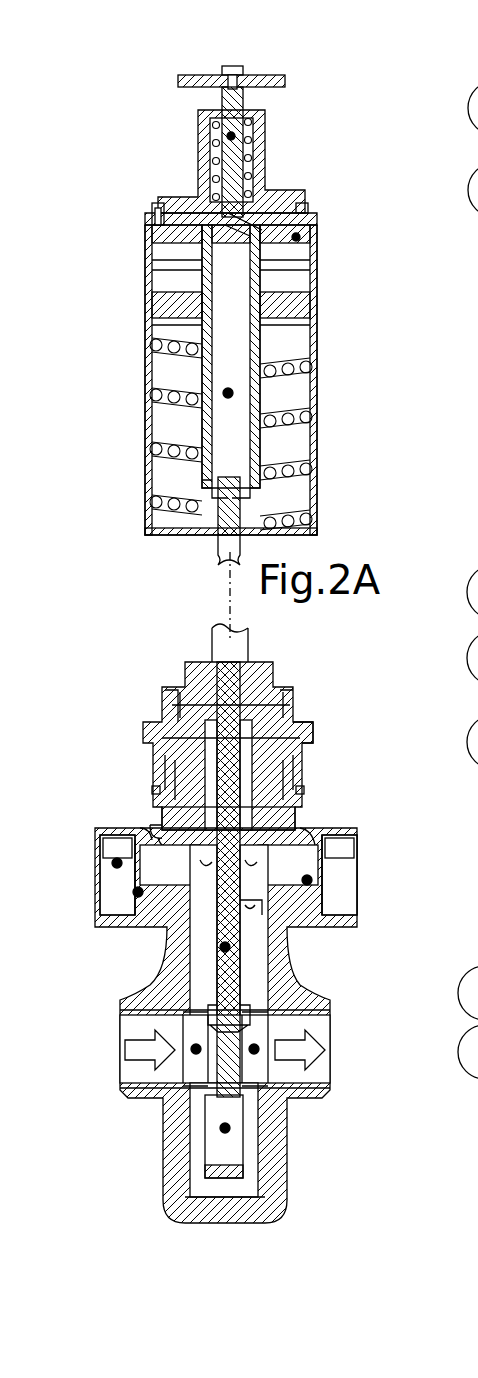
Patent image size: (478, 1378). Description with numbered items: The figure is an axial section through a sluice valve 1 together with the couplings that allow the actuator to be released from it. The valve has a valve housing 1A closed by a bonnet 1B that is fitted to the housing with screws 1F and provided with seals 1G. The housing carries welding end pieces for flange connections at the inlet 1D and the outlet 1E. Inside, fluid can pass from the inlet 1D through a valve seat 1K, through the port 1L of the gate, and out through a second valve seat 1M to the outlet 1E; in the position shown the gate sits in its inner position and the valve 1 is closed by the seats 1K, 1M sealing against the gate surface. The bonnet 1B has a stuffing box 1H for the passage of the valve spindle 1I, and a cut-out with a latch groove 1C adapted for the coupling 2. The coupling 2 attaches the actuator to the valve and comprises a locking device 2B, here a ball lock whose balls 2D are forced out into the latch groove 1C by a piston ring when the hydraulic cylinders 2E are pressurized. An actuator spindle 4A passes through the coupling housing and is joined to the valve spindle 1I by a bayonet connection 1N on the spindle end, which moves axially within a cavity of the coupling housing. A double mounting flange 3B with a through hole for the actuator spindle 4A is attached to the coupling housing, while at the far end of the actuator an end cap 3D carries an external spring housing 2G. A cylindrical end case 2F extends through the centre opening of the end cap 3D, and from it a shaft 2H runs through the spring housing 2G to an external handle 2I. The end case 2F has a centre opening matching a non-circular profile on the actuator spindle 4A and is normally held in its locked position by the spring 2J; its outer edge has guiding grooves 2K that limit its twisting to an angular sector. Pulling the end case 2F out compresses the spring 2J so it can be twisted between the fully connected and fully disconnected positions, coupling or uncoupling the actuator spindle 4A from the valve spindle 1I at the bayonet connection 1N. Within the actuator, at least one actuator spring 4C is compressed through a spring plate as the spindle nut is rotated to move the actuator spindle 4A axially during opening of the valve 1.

The sluice valve 1 is at (477, 1195).
The valve housing 1A is at (229, 1236).
The bonnet 1B is at (312, 880).
The latch groove 1C is at (140, 830).
The inlet 1D is at (110, 1048).
The outlet 1E is at (342, 1050).
The screws 1F is at (112, 863).
The seals 1G is at (133, 893).
The stuffing box 1H is at (248, 904).
The valve spindle 1I is at (220, 948).
The valve seat 1K is at (192, 1053).
The port 1L is at (221, 1132).
The valve seat 1M is at (258, 1053).
The bayonet connection 1N is at (307, 830).
The coupling 2 is at (100, 727).
The locking device 2B is at (329, 731).
The balls 2D is at (152, 835).
The hydraulic cylinders 2E is at (313, 785).
The end case 2F is at (233, 393).
The spring housing 2G is at (300, 185).
The shaft 2H is at (222, 136).
The handle 2I is at (193, 64).
The spring 2J is at (214, 166).
The guiding grooves 2K is at (145, 258).
The mounting flange 3B is at (284, 669).
The end cap 3D is at (300, 237).
The actuator spindle 4A is at (199, 641).
The actuator spring 4C is at (156, 392).